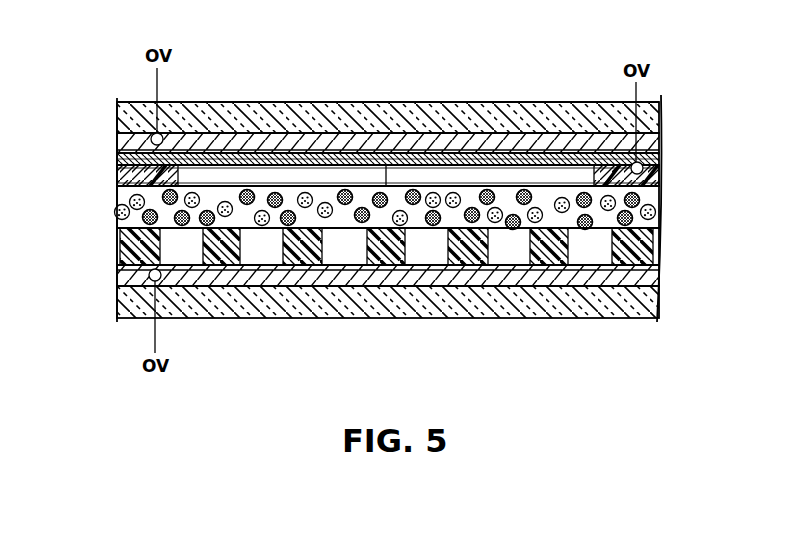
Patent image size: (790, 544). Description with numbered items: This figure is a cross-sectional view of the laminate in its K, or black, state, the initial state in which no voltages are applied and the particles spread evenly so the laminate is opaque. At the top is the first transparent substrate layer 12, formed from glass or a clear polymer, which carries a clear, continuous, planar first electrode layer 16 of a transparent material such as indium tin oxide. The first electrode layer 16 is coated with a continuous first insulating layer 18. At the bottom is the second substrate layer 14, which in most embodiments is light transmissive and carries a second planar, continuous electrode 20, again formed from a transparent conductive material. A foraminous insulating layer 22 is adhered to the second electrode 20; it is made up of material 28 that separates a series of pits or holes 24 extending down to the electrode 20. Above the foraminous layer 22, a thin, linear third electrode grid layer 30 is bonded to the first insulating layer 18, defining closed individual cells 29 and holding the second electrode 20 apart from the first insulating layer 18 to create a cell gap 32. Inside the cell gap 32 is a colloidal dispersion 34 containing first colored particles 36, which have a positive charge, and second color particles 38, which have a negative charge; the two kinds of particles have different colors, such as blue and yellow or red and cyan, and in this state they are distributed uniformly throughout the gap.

The first transparent substrate layer 12 is at (119, 109).
The second substrate layer 14 is at (119, 303).
The first electrode layer 16 is at (117, 143).
The first insulating layer 18 is at (117, 158).
The second electrode 20 is at (119, 275).
The foraminous insulating layer 22 is at (361, 303).
The pits or holes 24 is at (335, 256).
The material 28 is at (387, 250).
The cells 29 is at (522, 103).
The third electrode grid layer 30 is at (117, 176).
The cell gap 32 is at (108, 186).
The colloidal dispersion 34 is at (215, 200).
The first colored particles 36 is at (305, 192).
The second color particles 38 is at (345, 189).